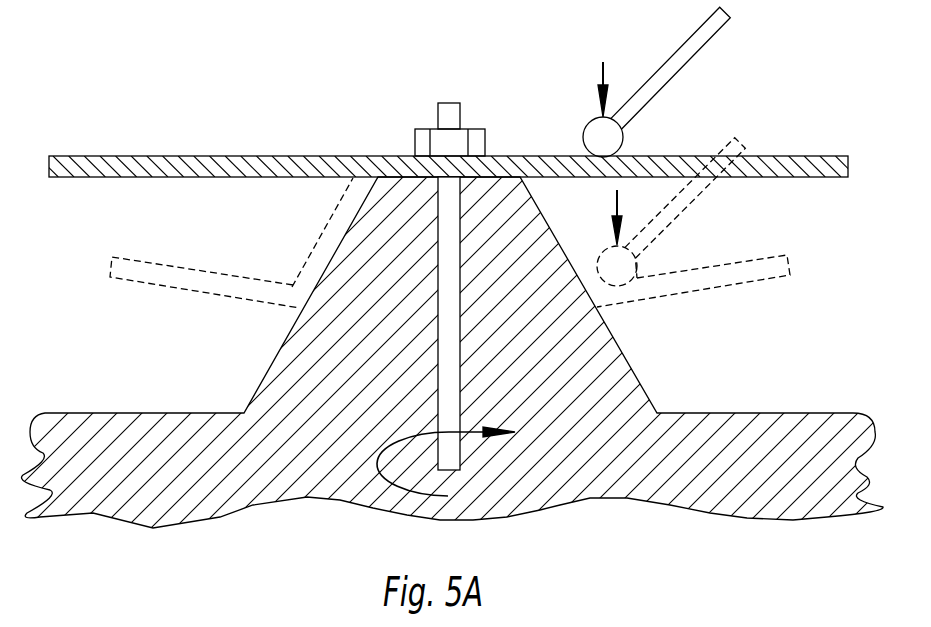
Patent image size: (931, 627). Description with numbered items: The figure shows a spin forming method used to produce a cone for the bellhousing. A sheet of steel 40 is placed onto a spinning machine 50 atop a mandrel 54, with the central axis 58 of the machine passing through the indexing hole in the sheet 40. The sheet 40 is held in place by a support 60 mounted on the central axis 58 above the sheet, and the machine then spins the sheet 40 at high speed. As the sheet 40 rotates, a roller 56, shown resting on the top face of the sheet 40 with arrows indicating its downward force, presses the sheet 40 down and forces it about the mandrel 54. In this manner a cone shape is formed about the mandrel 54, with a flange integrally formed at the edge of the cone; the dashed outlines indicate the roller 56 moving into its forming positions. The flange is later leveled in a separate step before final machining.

The sheet of steel 40 is at (118, 156).
The spinning machine 50 is at (465, 268).
The mandrel 54 is at (264, 374).
The roller 56 is at (686, 42).
The central axis 58 is at (452, 104).
The support 60 is at (416, 138).